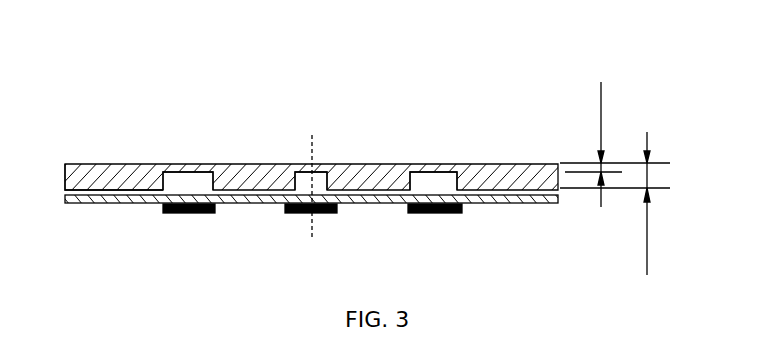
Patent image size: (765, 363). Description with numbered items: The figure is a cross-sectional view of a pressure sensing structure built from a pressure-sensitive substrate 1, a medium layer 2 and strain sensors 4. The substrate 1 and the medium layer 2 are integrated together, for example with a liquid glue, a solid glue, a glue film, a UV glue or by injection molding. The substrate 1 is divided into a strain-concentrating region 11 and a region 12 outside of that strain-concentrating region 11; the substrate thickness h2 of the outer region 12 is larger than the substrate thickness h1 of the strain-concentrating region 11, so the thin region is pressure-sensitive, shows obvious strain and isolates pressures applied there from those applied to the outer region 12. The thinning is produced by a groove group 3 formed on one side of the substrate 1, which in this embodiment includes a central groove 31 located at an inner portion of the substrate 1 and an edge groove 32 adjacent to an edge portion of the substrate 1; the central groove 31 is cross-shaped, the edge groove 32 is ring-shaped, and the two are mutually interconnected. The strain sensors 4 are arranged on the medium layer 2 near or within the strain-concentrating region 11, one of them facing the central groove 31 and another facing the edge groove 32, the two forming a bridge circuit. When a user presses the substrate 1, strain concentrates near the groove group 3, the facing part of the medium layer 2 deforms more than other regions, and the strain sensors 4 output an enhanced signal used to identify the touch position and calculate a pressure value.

The pressure-sensitive substrate 1 is at (145, 77).
The strain-concentrating region 11 is at (188, 170).
The region outside of the strain-concentrating region 12 is at (107, 172).
The medium layer 2 is at (518, 197).
The groove group 3 is at (443, 75).
The central groove 31 is at (319, 178).
The edge groove 32 is at (426, 180).
The strain sensors 4 is at (427, 216).
The substrate thickness of the strain-concentrating region h1 is at (613, 144).
The substrate thickness of the region outside the strain-concentrating region h2 is at (625, 203).